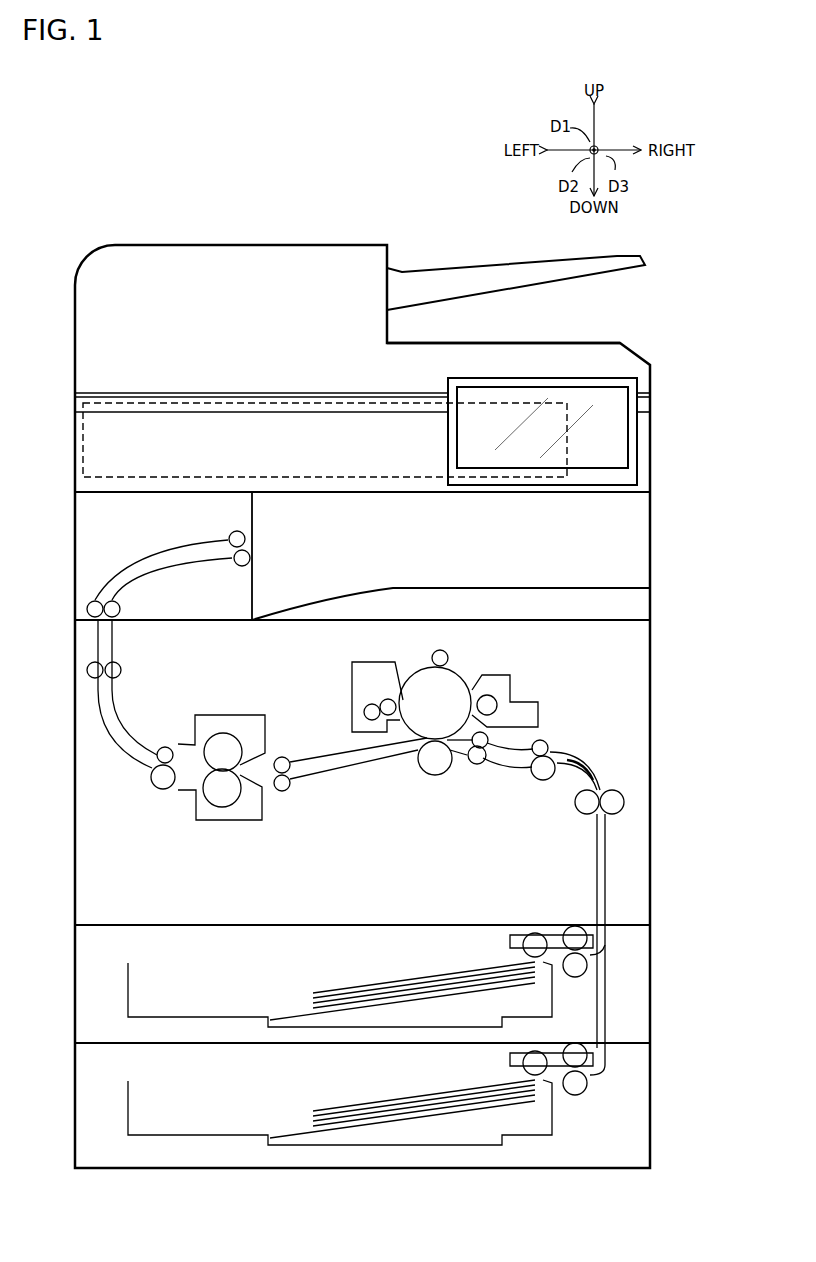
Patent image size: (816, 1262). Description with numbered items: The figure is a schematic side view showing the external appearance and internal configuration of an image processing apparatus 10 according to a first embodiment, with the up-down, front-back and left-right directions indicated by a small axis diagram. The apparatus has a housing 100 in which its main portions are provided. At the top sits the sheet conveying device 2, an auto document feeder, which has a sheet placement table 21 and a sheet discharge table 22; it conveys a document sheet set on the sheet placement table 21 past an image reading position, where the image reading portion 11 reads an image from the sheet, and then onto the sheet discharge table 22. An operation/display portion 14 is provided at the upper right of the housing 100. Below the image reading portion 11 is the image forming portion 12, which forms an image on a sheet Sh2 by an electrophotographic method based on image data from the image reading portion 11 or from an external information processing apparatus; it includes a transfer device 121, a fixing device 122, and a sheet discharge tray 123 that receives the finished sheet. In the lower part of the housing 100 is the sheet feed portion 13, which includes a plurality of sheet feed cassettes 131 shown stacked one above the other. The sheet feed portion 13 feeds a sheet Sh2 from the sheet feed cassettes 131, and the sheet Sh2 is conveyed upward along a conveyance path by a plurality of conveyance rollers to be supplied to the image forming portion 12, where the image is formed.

The image processing apparatus 10 is at (324, 241).
The sheet conveying device 2 is at (120, 259).
The housing 100 is at (650, 364).
The sheet placement table 21 is at (428, 270).
The sheet discharge table 22 is at (448, 340).
The operation/display portion 14 is at (568, 377).
The image reading portion 11 is at (83, 415).
The sheet discharge tray 123 is at (505, 588).
The image forming portion 12 is at (304, 689).
The fixing device 122 is at (196, 714).
The transfer device 121 is at (418, 766).
The sheet Sh2 is at (596, 760).
The sheet feed portion 13 is at (302, 990).
The sheet feed cassettes 131 is at (237, 1017).